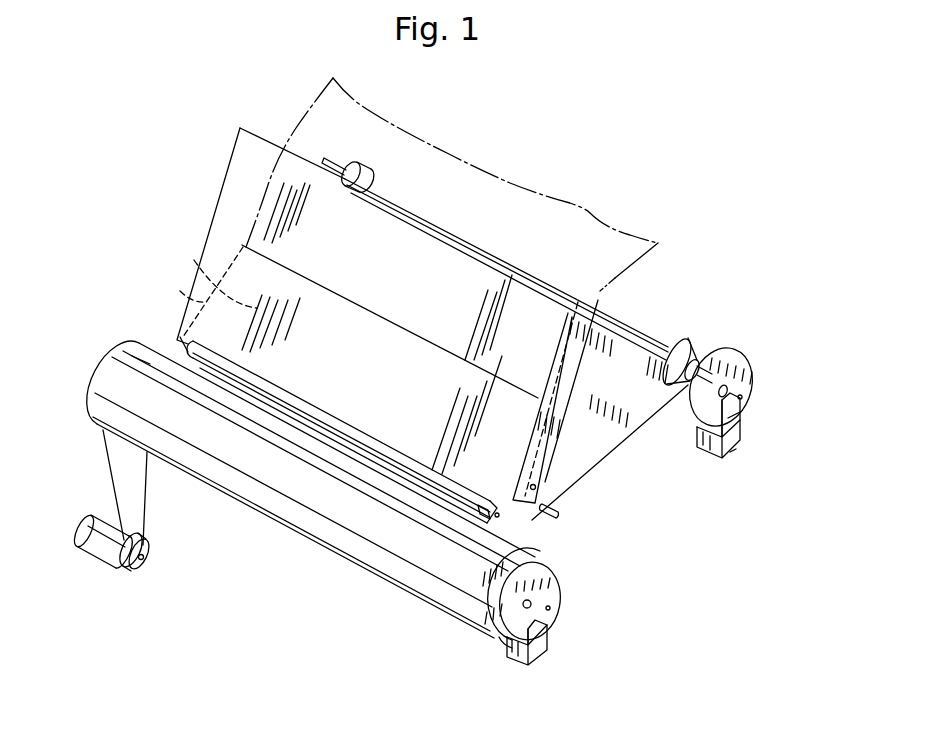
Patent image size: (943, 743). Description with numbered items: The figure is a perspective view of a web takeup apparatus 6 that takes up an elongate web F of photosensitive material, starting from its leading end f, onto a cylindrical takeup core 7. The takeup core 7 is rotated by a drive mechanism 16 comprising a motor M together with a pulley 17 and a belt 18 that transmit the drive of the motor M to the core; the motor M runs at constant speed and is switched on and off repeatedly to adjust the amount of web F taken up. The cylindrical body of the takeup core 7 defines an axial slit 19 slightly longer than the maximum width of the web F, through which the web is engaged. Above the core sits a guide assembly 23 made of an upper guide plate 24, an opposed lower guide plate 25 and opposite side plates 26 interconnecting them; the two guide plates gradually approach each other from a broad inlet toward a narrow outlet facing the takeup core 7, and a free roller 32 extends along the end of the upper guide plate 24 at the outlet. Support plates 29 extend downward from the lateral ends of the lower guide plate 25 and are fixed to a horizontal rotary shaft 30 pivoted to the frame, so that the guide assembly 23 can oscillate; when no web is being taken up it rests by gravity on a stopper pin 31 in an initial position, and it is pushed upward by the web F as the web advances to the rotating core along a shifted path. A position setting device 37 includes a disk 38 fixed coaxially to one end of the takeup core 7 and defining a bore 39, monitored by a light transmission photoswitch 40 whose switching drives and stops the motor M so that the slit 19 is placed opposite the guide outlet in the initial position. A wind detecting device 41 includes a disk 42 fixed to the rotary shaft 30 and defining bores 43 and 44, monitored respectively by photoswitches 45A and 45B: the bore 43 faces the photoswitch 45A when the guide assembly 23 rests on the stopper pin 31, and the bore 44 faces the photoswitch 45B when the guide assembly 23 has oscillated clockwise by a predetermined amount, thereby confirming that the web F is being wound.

The web F is at (596, 212).
The leading end f is at (584, 290).
The web takeup apparatus 6 is at (385, 347).
The takeup core 7 is at (442, 597).
The drive mechanism 16 is at (135, 545).
The pulley 17 is at (147, 571).
The belt 18 is at (150, 523).
The slit 19 is at (132, 356).
The guide assembly 23 is at (197, 206).
The upper guide plate 24 is at (233, 147).
The lower guide plate 25 is at (194, 260).
The side plates 26 is at (180, 291).
The support plates 29 is at (354, 165).
The rotary shaft 30 is at (653, 333).
The stopper pin 31 is at (560, 512).
The free roller 32 is at (538, 537).
The position setting device 37 is at (560, 627).
The disk 38 is at (497, 640).
The bore 39 is at (555, 607).
The photoswitch 40 is at (543, 650).
The wind detecting device 41 is at (758, 411).
The disk 42 is at (708, 440).
The bore 43 is at (738, 420).
The bore 44 is at (745, 398).
The photoswitch 45A is at (733, 452).
The photoswitch 45B is at (736, 388).
The motor M is at (96, 548).